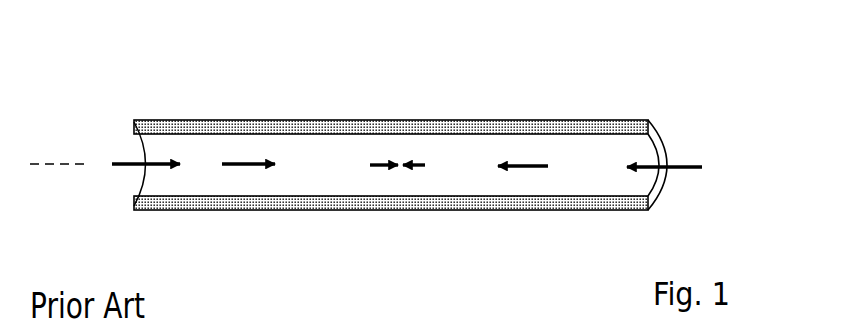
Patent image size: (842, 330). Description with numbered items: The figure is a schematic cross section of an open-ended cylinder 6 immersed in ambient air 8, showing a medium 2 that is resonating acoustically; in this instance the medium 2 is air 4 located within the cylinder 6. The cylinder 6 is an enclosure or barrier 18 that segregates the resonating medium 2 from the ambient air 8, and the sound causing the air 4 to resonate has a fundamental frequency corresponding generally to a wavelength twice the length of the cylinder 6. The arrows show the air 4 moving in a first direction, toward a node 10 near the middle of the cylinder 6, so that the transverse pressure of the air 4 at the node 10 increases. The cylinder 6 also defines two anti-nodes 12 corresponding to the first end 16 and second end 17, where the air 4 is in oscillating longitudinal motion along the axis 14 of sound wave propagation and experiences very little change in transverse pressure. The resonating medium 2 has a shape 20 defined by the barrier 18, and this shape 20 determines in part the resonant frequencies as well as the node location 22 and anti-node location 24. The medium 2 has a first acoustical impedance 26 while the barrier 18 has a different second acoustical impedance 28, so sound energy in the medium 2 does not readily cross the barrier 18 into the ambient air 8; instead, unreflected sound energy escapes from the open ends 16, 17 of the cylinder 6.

The medium 2 is at (398, 133).
The air 4 is at (242, 167).
The open-ended cylinder 6 is at (391, 233).
The ambient air 8 is at (334, 100).
The node 10 is at (408, 110).
The anti-nodes 12 is at (395, 148).
The axis 14 is at (56, 162).
The first end 16 is at (146, 165).
The second end 17 is at (665, 177).
The barrier 18 is at (272, 121).
The shape 20 is at (640, 187).
The node location 22 is at (399, 161).
The anti-node location 24 is at (141, 166).
The first acoustical impedance 26 is at (497, 150).
The second acoustical impedance 28 is at (572, 208).